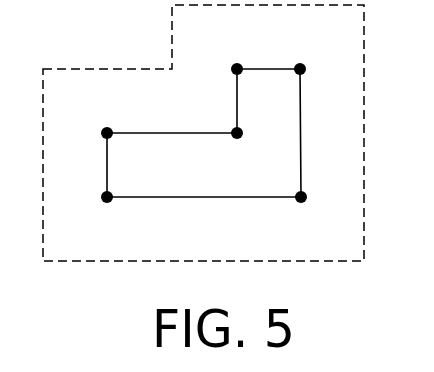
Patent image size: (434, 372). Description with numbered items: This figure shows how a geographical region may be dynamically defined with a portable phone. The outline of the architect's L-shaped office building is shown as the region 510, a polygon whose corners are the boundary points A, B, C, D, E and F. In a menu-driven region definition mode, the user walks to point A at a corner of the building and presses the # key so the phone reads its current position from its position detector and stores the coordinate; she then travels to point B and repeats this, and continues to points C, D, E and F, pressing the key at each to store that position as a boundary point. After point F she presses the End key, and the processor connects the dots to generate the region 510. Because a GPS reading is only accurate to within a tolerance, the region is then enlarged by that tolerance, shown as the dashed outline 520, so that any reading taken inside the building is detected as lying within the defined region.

The outline of L-shaped office building 510 is at (200, 142).
The enlarged region 520 is at (143, 67).
The point A is at (309, 59).
The point B is at (232, 59).
The point C is at (229, 124).
The point D is at (106, 123).
The point E is at (95, 200).
The point F is at (308, 207).